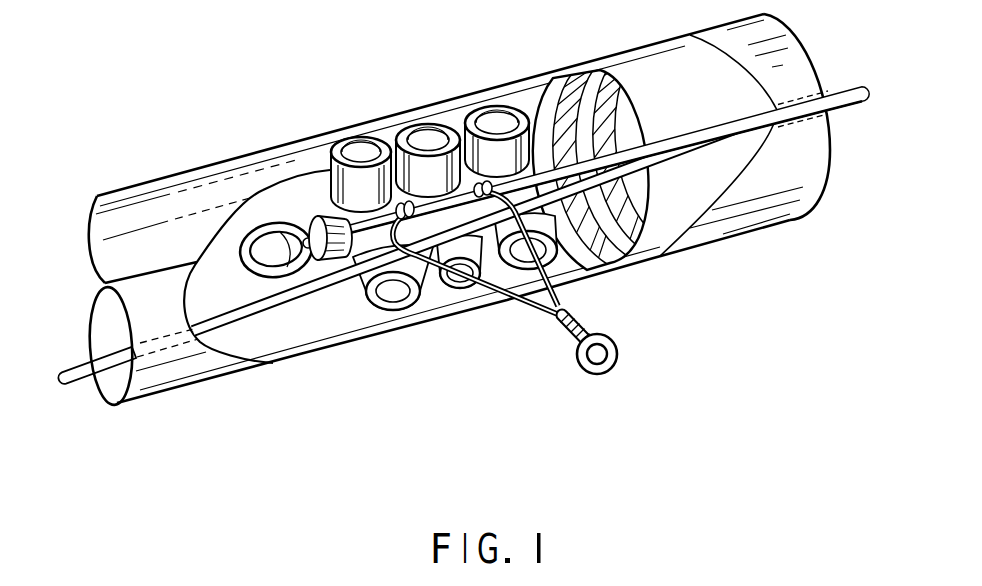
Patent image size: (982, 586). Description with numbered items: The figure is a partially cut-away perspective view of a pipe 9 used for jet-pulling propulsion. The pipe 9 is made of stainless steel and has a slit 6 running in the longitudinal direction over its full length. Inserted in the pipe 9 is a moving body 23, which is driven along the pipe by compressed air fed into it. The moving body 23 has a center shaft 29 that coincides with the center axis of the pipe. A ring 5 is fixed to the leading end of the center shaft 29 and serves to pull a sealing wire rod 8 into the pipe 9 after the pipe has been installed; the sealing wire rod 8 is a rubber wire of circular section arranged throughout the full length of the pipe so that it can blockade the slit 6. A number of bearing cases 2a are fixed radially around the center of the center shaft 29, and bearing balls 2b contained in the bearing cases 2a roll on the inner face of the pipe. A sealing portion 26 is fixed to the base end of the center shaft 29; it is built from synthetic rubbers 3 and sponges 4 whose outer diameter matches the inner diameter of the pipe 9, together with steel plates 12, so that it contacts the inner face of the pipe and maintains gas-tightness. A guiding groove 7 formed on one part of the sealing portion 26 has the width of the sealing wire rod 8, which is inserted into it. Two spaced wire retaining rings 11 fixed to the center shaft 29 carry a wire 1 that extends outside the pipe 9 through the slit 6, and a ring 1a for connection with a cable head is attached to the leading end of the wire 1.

The wire 1 is at (522, 292).
The ring 1a is at (584, 372).
The bearing cases 2a is at (356, 292).
The bearing balls 2b is at (455, 289).
The synthetic rubbers 3 is at (640, 252).
The sponges 4 is at (598, 268).
The ring 5 is at (268, 224).
The slit 6 is at (103, 283).
The guiding groove 7 is at (703, 212).
The sealing wire rod 8 is at (78, 385).
The pipe 9 is at (773, 182).
The wire retaining rings 11 is at (493, 124).
The steel plates 12 is at (514, 186).
The moving body 23 is at (430, 120).
The sealing portion 26 is at (606, 218).
The center shaft 29 is at (321, 214).